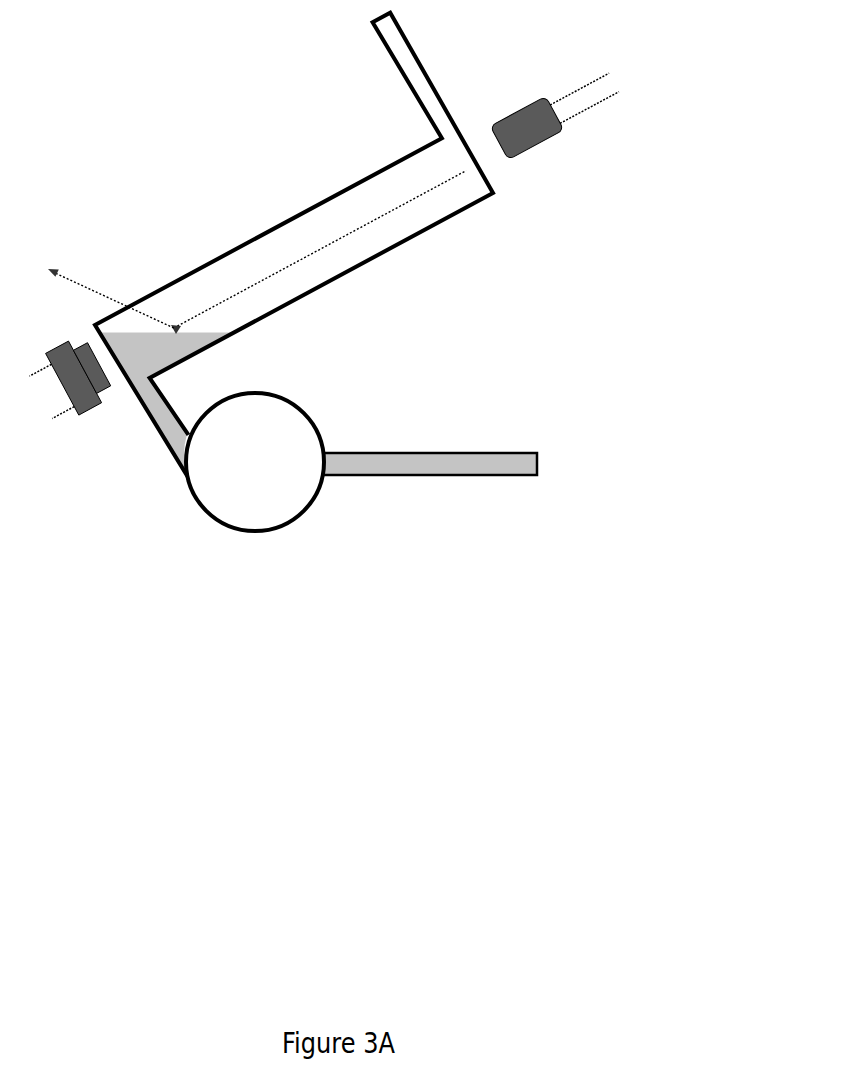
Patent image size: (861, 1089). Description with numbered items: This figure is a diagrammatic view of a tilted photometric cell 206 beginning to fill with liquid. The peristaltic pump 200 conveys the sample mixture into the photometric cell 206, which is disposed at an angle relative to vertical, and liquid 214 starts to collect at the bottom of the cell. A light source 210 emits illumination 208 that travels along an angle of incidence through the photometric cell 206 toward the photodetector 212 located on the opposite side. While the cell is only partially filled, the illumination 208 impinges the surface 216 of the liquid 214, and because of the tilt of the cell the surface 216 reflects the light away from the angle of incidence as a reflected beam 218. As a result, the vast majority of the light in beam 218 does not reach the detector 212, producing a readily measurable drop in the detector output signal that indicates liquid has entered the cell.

The peristaltic pump 200 is at (303, 510).
The photometric cell 206 is at (292, 218).
The illumination 208 is at (357, 227).
The light source 210 is at (545, 145).
The photodetector 212 is at (93, 410).
The liquid 214 is at (178, 350).
The surface 216 is at (208, 332).
The beam 218 is at (90, 293).